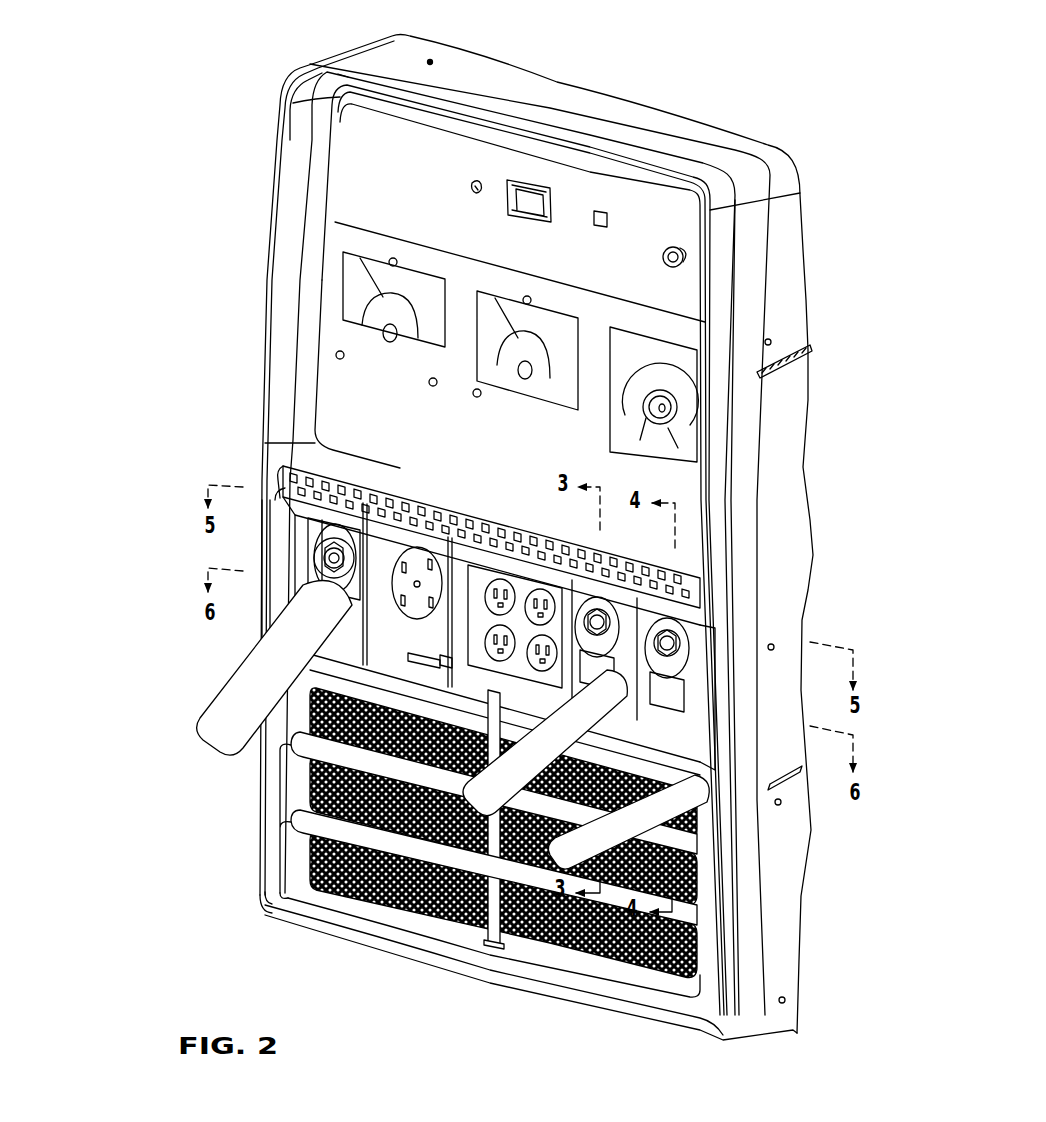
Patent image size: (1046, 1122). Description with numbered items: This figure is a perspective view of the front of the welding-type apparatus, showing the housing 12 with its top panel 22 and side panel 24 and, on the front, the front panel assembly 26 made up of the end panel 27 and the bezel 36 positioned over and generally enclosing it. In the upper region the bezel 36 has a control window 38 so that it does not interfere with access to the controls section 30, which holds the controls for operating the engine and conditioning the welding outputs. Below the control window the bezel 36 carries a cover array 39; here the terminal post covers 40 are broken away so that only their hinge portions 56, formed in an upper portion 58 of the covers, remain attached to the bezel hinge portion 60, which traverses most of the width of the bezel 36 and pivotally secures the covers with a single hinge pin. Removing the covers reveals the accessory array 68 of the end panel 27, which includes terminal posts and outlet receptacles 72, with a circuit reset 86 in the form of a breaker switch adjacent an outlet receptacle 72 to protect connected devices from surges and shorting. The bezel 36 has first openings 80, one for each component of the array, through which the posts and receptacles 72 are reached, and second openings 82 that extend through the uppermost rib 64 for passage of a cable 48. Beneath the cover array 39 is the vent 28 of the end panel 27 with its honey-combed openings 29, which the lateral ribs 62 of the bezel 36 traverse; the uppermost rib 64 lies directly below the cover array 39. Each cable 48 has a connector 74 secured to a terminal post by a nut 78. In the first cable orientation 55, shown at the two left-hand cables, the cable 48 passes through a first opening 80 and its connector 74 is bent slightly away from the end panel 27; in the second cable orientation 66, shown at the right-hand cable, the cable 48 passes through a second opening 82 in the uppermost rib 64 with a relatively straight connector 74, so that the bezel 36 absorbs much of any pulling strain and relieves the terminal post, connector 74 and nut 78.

The housing 12 is at (672, 58).
The top panel 22 is at (557, 88).
The side panel 24 is at (767, 531).
The front panel assembly 26 is at (118, 374).
The end panel 27 is at (627, 255).
The vent 28 is at (262, 897).
The honey-combed openings 29 is at (388, 900).
The controls section 30 is at (380, 186).
The bezel 36 is at (350, 45).
The control window 38 is at (340, 232).
The cover array 39 is at (178, 477).
The terminal post covers 40 is at (338, 478).
The cable 48 is at (259, 694).
The first cable orientation 55 is at (225, 733).
The hinge portion 56 is at (392, 485).
The upper portion 58 is at (207, 446).
The hinge portion of bezel 60 is at (510, 522).
The lateral ribs 62 is at (625, 965).
The uppermost rib 64 is at (700, 765).
The second cable orientation 66 is at (492, 975).
The accessory array 68 is at (172, 566).
The outlet receptacles 72 is at (397, 644).
The connector 74 is at (310, 590).
The nut 78 is at (325, 568).
The first openings 80 is at (383, 548).
The second openings 82 is at (352, 652).
The circuit reset 86 is at (430, 648).